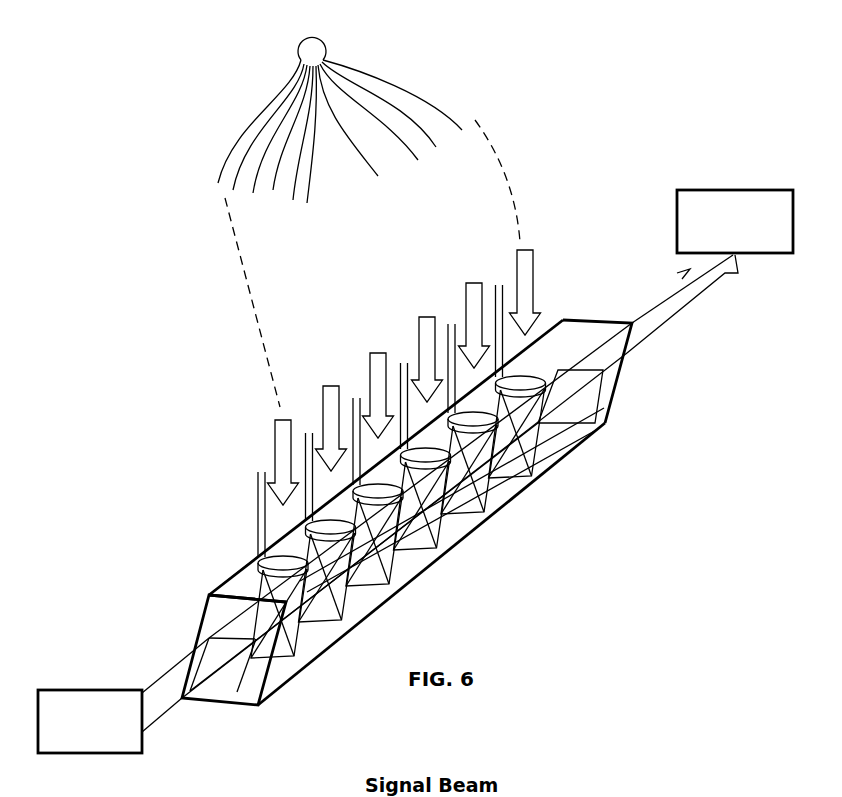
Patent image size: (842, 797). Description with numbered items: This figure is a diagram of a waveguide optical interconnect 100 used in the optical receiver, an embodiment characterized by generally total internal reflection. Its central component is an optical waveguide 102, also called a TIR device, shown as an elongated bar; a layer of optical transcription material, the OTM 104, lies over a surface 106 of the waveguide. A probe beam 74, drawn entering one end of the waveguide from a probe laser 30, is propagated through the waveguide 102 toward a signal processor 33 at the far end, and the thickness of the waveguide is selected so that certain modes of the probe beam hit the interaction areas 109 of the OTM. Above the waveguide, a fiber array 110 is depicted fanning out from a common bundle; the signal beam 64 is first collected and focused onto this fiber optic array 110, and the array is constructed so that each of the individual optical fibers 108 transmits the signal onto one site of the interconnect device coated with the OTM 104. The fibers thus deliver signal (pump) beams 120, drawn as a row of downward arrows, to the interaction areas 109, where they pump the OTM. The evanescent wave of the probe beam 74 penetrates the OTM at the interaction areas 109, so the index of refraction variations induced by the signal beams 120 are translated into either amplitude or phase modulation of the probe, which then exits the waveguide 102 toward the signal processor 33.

The waveguide optical interconnect 100 is at (721, 169).
The fiber array 110 is at (346, 61).
The signal beam 64 is at (318, 50).
The optical waveguide 102 is at (288, 668).
The surface 106 is at (210, 597).
The layer of optical transcription material (OTM) 104 is at (235, 588).
The interaction areas 109 is at (257, 558).
The optical fibers 108 is at (265, 530).
The signal (pump) beams 120 is at (323, 410).
The probe laser 30 is at (117, 742).
The probe beam 74 is at (172, 710).
The signal processor 33 is at (765, 247).